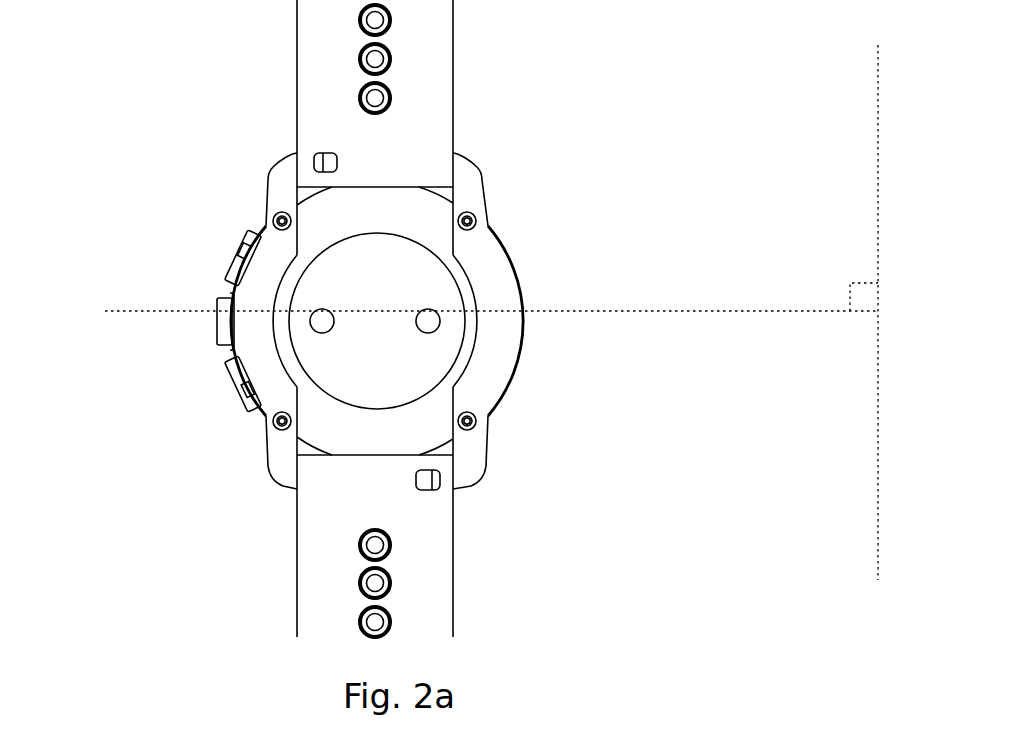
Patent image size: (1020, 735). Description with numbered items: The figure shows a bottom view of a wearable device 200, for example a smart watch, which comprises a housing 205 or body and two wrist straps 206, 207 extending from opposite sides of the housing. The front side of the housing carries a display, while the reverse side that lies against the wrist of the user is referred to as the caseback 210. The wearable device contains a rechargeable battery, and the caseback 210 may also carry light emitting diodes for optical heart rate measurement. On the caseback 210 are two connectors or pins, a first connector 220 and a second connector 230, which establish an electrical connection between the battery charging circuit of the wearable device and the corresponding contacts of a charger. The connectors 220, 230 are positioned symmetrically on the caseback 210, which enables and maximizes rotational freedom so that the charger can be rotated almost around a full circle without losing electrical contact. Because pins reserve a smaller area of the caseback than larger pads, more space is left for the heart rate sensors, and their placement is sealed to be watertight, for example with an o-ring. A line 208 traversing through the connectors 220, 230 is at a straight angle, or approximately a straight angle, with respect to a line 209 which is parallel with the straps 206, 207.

The wearable device 200 is at (205, 143).
The housing 205 is at (215, 340).
The wrist strap 206 is at (428, 122).
The wrist strap 207 is at (428, 571).
The line traversing through the connectors 208 is at (632, 311).
The line parallel with the straps 209 is at (878, 71).
The caseback 210 is at (398, 378).
The first connector 220 is at (322, 306).
The second connector 230 is at (424, 306).